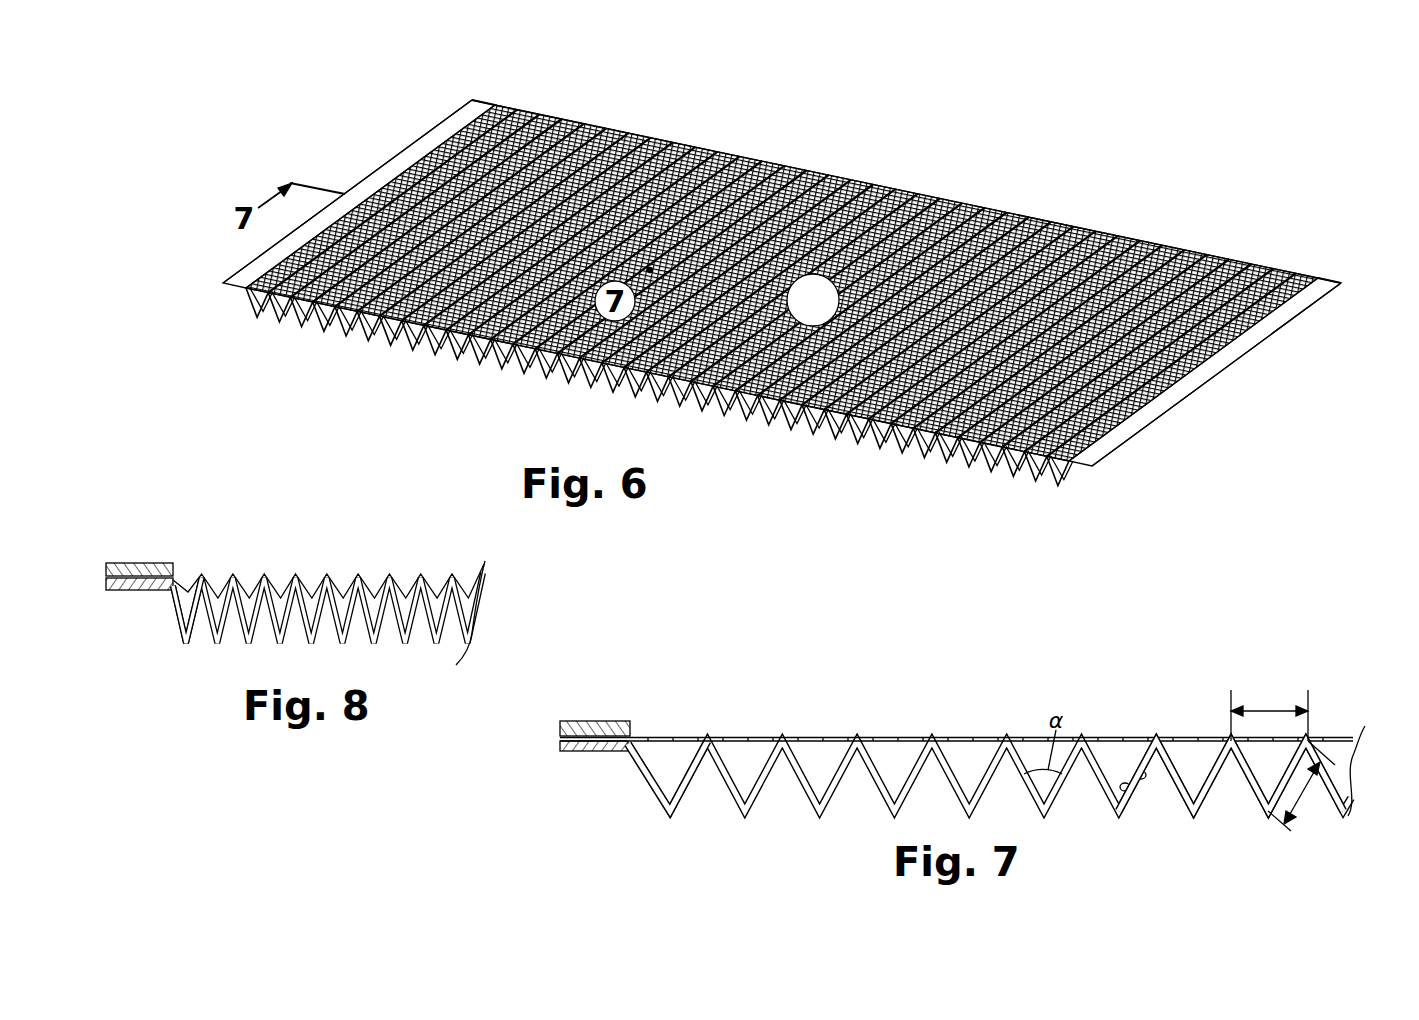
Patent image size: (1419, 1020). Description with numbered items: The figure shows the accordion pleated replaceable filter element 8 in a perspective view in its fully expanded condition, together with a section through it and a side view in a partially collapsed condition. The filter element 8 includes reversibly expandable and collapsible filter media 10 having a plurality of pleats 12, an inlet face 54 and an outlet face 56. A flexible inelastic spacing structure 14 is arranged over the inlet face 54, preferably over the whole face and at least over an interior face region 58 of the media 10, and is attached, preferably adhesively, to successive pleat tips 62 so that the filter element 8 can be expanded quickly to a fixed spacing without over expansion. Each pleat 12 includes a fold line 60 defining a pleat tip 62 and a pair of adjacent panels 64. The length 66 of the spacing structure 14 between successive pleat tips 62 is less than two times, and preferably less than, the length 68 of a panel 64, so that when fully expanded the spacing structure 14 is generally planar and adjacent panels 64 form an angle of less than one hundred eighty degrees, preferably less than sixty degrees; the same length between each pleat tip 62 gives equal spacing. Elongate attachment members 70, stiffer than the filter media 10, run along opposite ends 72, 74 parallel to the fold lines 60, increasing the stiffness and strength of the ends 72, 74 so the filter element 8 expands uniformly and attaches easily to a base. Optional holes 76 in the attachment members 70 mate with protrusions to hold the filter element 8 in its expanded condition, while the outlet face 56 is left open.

In FIG. 6, the filter element 8 is at (916, 162).
In FIG. 7, the filter element 8 is at (1005, 704).
In FIG. 6, the filter media 10 is at (699, 398).
In FIG. 8, the filter media 10 is at (310, 618).
In FIG. 7, the filter media 10 is at (1055, 782).
In FIG. 6, the pleats 12 is at (455, 343).
In FIG. 8, the pleats 12 is at (208, 625).
In FIG. 7, the pleats 12 is at (790, 775).
In FIG. 6, the spacing structure 14 is at (1097, 227).
In FIG. 8, the spacing structure 14 is at (266, 580).
In FIG. 7, the spacing structure 14 is at (835, 729).
In FIG. 6, the inlet face 54 is at (761, 154).
In FIG. 7, the inlet face 54 is at (640, 689).
In FIG. 6, the outlet face 56 is at (862, 441).
In FIG. 7, the outlet face 56 is at (637, 857).
In FIG. 6, the interior face region 58 is at (791, 305).
In FIG. 7, the fold line 60 is at (1131, 762).
In FIG. 6, the pleat tip 62 is at (541, 365).
In FIG. 7, the pleat tip 62 is at (1223, 733).
In FIG. 7, the panels 64 is at (1120, 782).
In FIG. 7, the length of the spacing structure 66 is at (1260, 700).
In FIG. 7, the length of a panel 68 is at (1297, 783).
In FIG. 6, the attachment members 70 is at (382, 165).
In FIG. 8, the attachment members 70 is at (130, 556).
In FIG. 7, the attachment members 70 is at (585, 713).
In FIG. 6, the end 72 is at (470, 93).
In FIG. 8, the end 72 is at (98, 575).
In FIG. 7, the end 72 is at (553, 729).
In FIG. 6, the end 74 is at (1313, 274).
In FIG. 6, the holes 76 is at (427, 131).